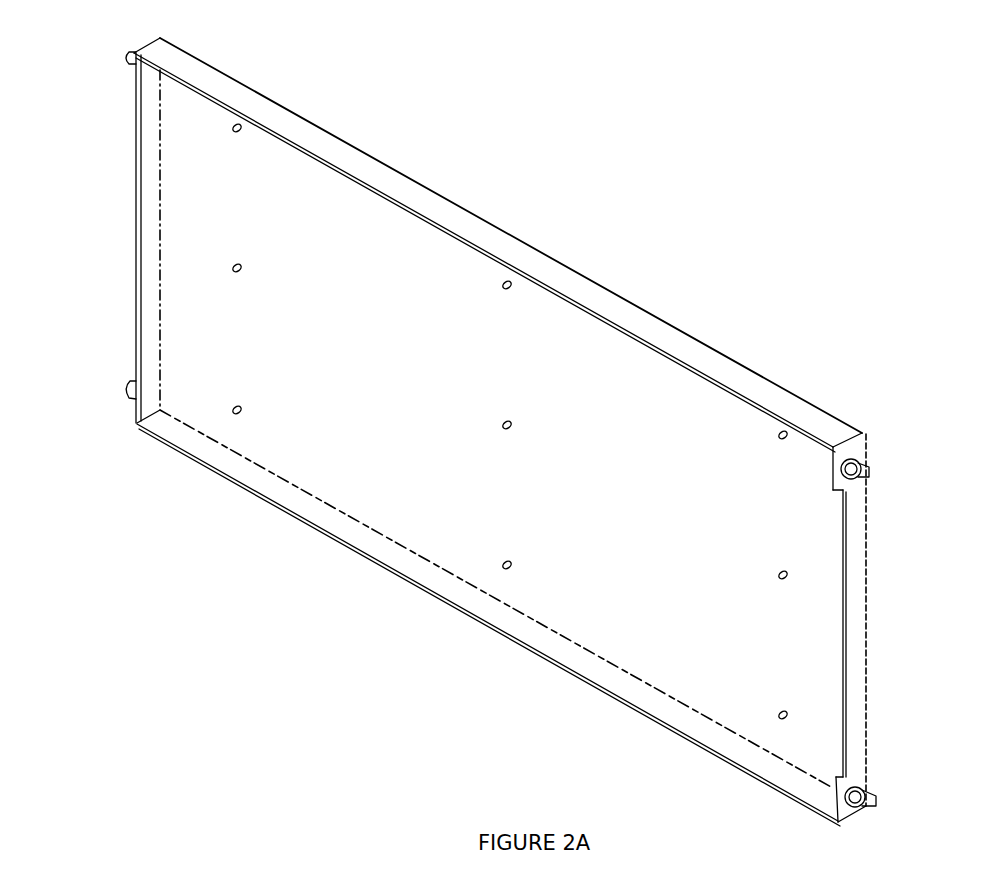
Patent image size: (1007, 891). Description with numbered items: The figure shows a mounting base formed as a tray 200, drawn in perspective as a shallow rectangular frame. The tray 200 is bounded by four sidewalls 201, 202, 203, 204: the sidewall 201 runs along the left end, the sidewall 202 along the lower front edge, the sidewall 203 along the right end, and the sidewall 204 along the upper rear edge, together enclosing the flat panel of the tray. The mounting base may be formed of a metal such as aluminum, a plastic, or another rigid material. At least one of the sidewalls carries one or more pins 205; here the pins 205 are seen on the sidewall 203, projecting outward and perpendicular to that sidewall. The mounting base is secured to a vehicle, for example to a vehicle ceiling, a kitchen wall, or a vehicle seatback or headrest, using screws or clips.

The tray 200 is at (383, 487).
The sidewall 201 is at (143, 241).
The sidewall 202 is at (462, 594).
The sidewall 203 is at (853, 588).
The sidewall 204 is at (485, 230).
The pin 205 is at (866, 474).